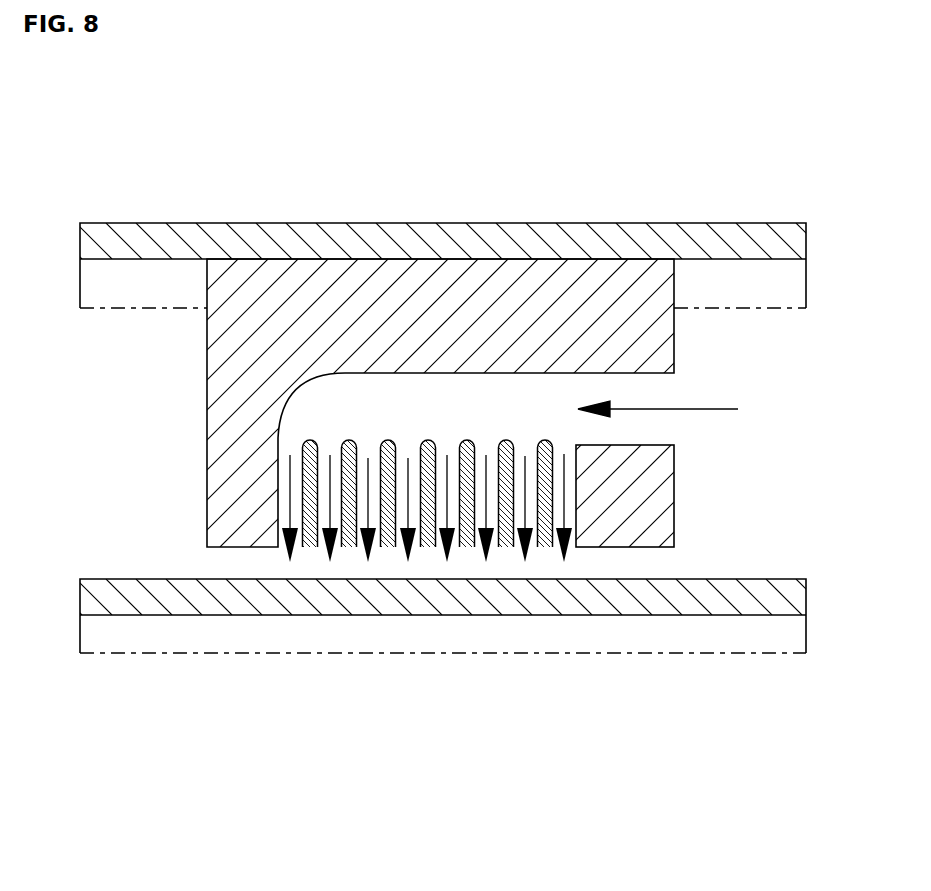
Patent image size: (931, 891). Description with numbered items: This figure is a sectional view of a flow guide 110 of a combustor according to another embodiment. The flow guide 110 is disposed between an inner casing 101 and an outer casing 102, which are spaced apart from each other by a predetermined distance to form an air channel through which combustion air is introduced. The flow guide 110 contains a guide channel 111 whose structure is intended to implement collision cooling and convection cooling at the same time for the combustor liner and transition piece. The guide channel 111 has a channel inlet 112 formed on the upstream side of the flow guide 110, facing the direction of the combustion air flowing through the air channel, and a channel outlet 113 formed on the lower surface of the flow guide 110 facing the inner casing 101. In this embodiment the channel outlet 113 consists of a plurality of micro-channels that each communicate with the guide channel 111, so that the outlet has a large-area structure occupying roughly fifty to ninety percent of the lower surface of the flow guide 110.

The inner casing 101 is at (145, 602).
The outer casing 102 is at (155, 238).
The flow guide 110 is at (230, 392).
The guide channel 111 is at (458, 400).
The channel inlet 112 is at (674, 373).
The channel outlet 113 is at (297, 548).